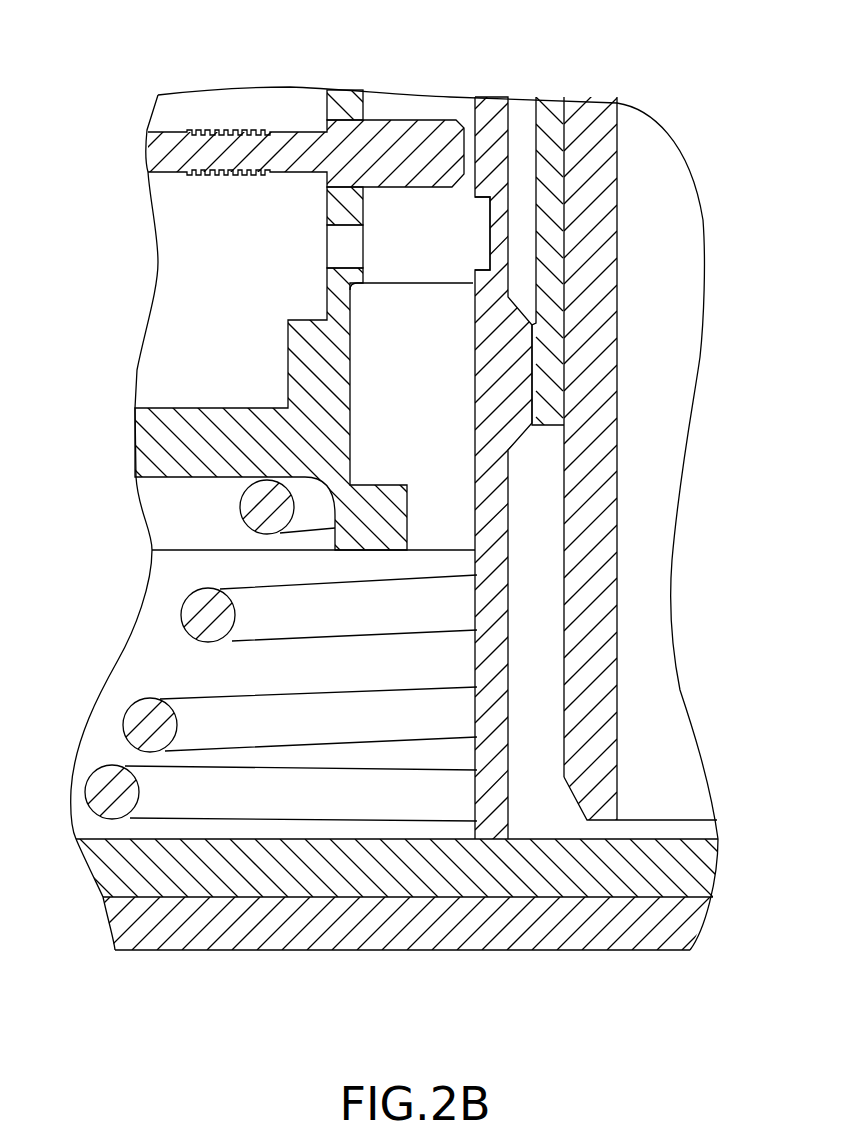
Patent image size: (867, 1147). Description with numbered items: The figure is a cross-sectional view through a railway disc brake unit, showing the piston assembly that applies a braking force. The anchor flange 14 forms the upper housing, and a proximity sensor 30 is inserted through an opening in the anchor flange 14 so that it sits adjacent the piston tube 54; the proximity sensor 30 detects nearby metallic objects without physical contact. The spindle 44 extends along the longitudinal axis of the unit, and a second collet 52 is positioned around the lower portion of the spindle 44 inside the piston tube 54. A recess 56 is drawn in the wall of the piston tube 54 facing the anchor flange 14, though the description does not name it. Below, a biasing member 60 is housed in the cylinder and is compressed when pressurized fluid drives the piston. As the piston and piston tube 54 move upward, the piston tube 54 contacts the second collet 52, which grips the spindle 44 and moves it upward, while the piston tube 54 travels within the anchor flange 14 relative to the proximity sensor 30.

The anchor flange 14 is at (157, 428).
The proximity sensor 30 is at (410, 137).
The spindle 44 is at (590, 596).
The second collet 52 is at (548, 132).
The piston tube 54 is at (487, 120).
The groove 56 is at (488, 235).
The biasing member 60 is at (153, 697).